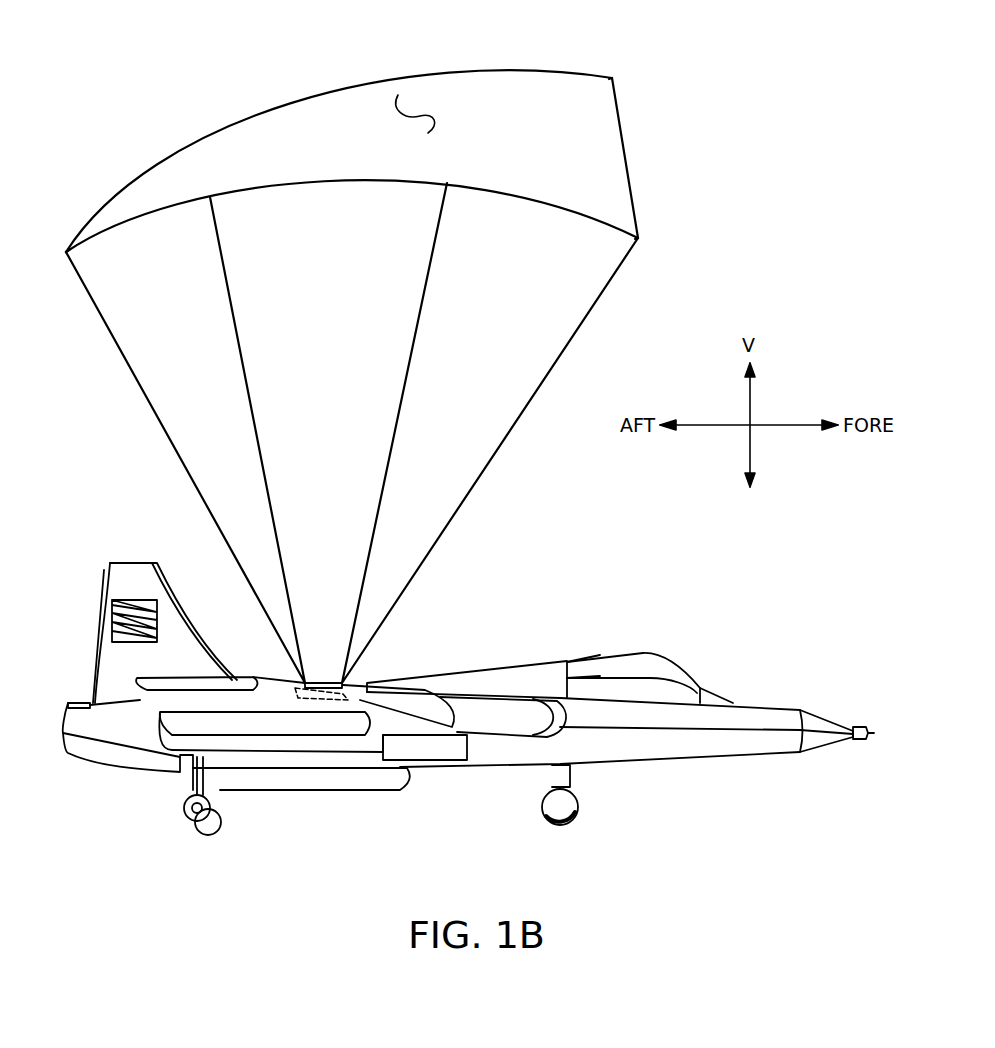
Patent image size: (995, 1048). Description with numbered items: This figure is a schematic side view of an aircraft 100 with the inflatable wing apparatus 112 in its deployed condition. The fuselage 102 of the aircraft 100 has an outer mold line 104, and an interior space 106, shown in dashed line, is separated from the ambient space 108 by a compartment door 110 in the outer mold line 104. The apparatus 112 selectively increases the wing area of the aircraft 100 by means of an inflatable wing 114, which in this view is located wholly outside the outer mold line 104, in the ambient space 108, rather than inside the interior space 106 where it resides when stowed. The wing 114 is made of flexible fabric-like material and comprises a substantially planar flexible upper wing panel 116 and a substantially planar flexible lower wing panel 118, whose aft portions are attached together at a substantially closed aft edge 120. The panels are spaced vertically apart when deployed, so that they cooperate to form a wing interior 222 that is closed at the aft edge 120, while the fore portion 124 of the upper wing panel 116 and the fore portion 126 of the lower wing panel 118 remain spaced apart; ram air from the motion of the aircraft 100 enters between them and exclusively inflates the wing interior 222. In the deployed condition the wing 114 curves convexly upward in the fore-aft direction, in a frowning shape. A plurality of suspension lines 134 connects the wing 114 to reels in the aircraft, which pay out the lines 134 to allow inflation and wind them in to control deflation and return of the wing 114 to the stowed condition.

The aircraft 100 is at (744, 632).
The fuselage 102 is at (550, 697).
The outer mold line 104 is at (453, 673).
The interior space 106 is at (352, 685).
The ambient space 108 is at (557, 501).
The compartment door 110 is at (322, 682).
The apparatus 112 is at (706, 252).
The inflatable wing 114 is at (612, 152).
The upper wing panel 116 is at (316, 98).
The lower wing panel 118 is at (327, 182).
The aft edge 120 is at (67, 247).
The fore portion of upper wing panel 124 is at (618, 75).
The fore portion of lower wing panel 126 is at (647, 238).
The suspension lines 134 is at (150, 403).
The wing interior 222 is at (423, 110).